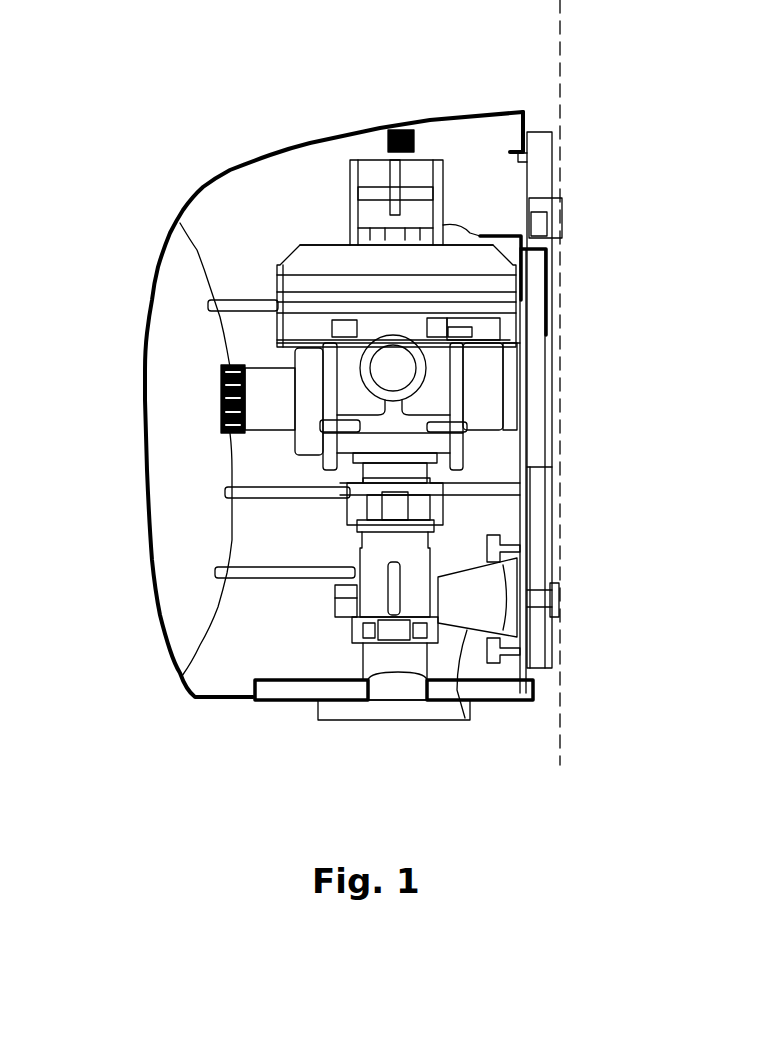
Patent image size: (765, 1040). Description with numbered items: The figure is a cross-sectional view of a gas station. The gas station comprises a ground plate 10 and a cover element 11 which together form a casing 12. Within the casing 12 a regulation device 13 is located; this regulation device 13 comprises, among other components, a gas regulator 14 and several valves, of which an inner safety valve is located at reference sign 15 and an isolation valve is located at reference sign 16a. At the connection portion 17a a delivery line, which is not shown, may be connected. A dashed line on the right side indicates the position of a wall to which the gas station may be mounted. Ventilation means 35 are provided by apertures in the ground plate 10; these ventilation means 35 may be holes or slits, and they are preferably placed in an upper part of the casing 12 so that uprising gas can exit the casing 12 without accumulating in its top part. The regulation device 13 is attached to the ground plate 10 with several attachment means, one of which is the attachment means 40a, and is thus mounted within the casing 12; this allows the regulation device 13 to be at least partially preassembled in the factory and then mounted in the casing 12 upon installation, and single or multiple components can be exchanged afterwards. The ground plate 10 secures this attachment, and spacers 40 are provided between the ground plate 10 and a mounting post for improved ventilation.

The ground plate 10 is at (540, 136).
The cover element 11 is at (428, 116).
The casing 12 is at (509, 112).
The regulation device 13 is at (497, 358).
The gas regulator 14 is at (503, 237).
The inner safety valve 15 is at (222, 390).
The isolation valve 16a is at (335, 608).
The connection portion 17a is at (398, 708).
The ventilation means 35 is at (523, 162).
The spacers 40 is at (562, 204).
The attachment means 40a is at (465, 718).